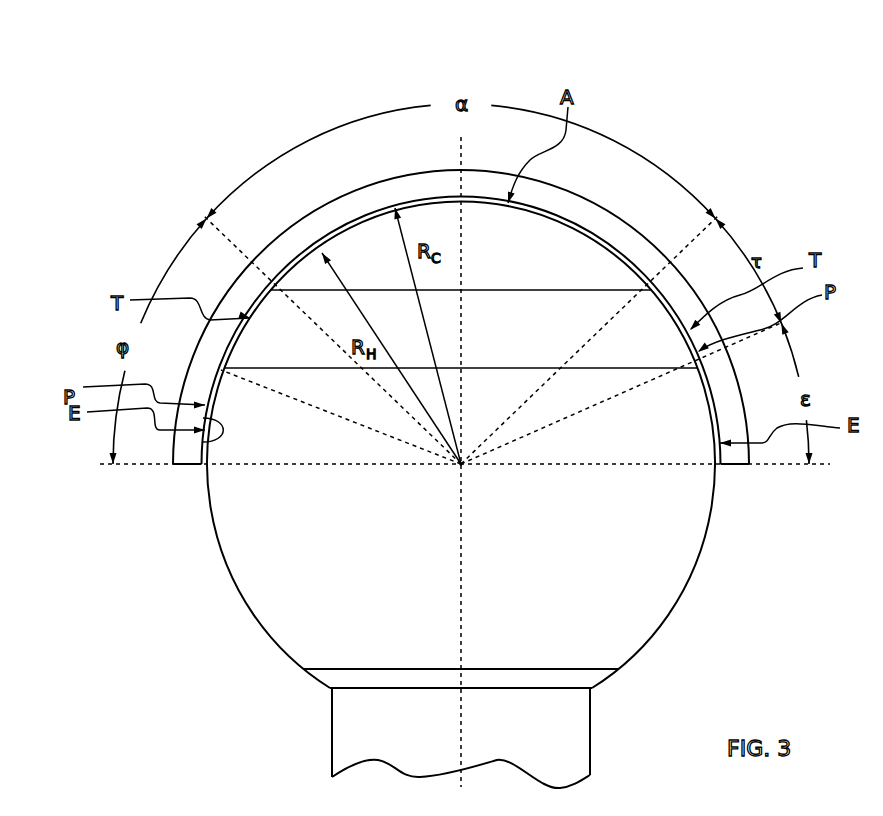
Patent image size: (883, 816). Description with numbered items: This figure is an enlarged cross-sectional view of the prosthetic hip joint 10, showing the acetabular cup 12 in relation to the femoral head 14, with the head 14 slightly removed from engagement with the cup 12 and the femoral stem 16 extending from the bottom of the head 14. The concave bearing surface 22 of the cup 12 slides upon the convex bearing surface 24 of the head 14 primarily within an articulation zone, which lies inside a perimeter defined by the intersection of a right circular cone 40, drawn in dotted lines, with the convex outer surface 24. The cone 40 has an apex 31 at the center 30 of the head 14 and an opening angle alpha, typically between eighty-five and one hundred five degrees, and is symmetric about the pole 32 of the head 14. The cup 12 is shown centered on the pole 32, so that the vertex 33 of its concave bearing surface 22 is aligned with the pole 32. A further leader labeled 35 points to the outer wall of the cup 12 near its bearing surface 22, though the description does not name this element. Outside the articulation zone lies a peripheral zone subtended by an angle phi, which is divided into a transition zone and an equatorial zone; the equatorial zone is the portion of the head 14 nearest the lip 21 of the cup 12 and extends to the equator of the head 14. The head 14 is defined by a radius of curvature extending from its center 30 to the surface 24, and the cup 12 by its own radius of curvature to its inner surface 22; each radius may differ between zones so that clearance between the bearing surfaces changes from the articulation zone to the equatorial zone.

The prosthetic hip joint 10 is at (158, 128).
The acetabular cup 12 is at (305, 225).
The femoral head 14 is at (525, 225).
The femoral stem 16 is at (560, 752).
The lip 21 is at (183, 467).
The concave bearing surface 22 is at (203, 443).
The convex bearing surface 24 is at (205, 582).
The center 30 is at (461, 464).
The apex 31 is at (461, 464).
The pole 32 is at (470, 203).
The vertex 33 is at (458, 200).
The coating layer 35 is at (560, 220).
The right circular cone 40 is at (720, 220).